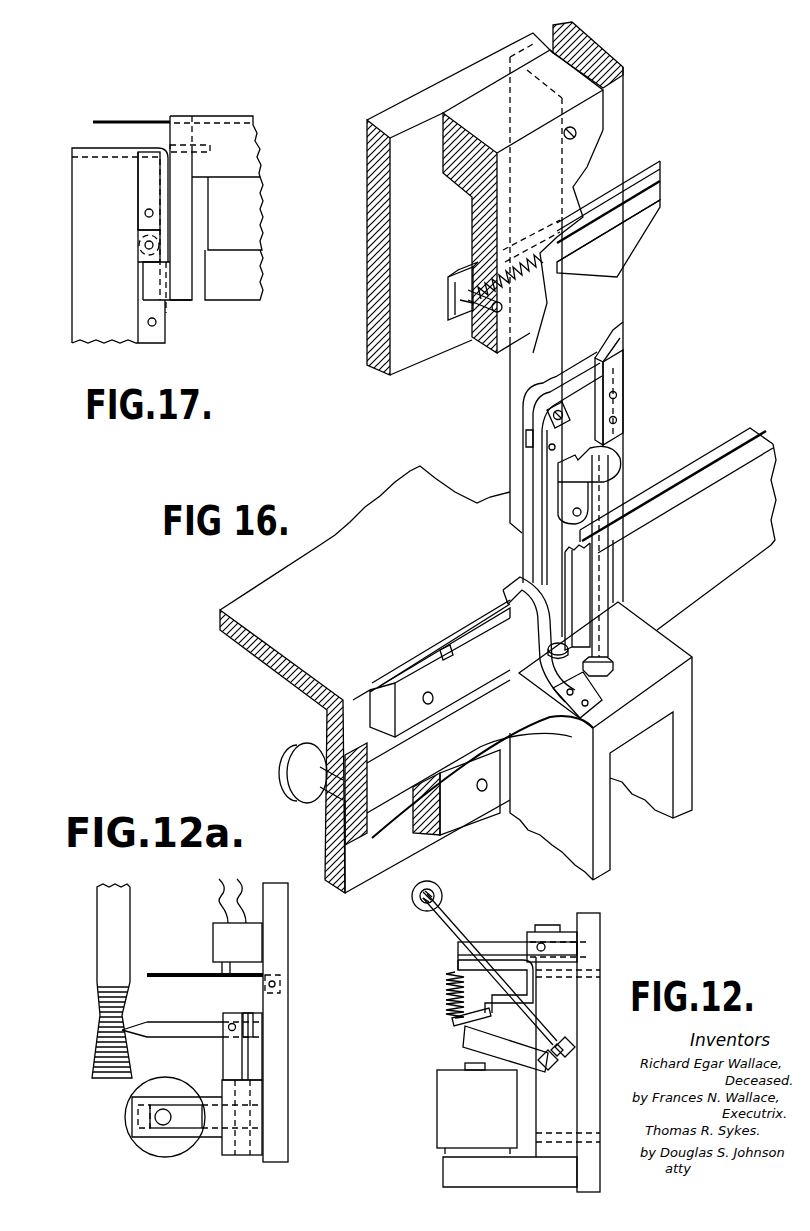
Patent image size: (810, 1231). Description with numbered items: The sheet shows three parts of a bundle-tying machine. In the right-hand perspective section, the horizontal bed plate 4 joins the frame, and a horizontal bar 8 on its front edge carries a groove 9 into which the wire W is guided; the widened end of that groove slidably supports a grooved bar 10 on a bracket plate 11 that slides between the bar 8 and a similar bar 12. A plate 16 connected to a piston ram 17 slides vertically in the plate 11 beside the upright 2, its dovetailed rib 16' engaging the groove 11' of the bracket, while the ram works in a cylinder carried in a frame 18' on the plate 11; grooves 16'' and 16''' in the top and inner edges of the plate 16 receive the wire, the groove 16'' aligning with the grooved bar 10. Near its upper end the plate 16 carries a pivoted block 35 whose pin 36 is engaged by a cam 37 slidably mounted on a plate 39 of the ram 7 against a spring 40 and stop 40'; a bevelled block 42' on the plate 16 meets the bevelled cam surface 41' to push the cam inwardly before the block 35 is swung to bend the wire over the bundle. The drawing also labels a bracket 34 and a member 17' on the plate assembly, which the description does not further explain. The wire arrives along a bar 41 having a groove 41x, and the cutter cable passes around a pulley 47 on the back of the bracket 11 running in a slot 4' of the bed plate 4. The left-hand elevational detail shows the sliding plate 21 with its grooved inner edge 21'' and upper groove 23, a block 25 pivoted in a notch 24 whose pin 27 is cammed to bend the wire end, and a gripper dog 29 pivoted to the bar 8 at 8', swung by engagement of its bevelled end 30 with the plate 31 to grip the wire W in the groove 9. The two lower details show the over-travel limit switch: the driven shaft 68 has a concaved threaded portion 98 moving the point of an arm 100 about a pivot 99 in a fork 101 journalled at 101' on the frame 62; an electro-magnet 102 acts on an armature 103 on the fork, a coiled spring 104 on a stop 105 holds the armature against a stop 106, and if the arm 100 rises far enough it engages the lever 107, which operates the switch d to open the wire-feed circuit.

In FIG. 17, the wire W is at (106, 120).
In FIG. 17, the plate 21 is at (101, 245).
In FIG. 17, the groove 23 is at (100, 160).
In FIG. 17, the block 25 is at (142, 194).
In FIG. 17, the pin 27 is at (145, 214).
In FIG. 17, the notch 24 is at (140, 243).
In FIG. 17, the bevelled end 30 is at (146, 288).
In FIG. 17, the plate 31 is at (152, 343).
In FIG. 17, the grooved inner vertical edge 21'' is at (183, 321).
In FIG. 17, the gripper dog 29 is at (180, 128).
In FIG. 17, the pivot 8' is at (199, 118).
In FIG. 17, the groove 9 is at (262, 125).
In FIG. 16, the groove 9 is at (405, 678).
In FIG. 17, the horizontal bar 8 is at (270, 151).
In FIG. 16, the horizontal bar 8 is at (441, 643).
In FIG. 17, the bracket plate 11 is at (247, 213).
In FIG. 16, the bracket plate 11 is at (480, 759).
In FIG. 17, the bar 12 is at (253, 280).
In FIG. 16, the bar 12 is at (467, 813).
In FIG. 16, the ram 7 is at (398, 292).
In FIG. 16, the plate 39 is at (496, 221).
In FIG. 16, the upright 2 is at (617, 134).
In FIG. 16, the stop 40' is at (456, 322).
In FIG. 16, the spring 40 is at (537, 283).
In FIG. 16, the bevelled cam surface 41' is at (624, 211).
In FIG. 16, the cam 37 is at (613, 255).
In FIG. 16, the bevelled block 42' is at (632, 383).
In FIG. 16, the groove 16'' is at (533, 396).
In FIG. 16, the pin 36 is at (550, 415).
In FIG. 16, the block 35 is at (527, 437).
In FIG. 16, the groove 16''' is at (504, 501).
In FIG. 16, the bent bracket 34 is at (505, 589).
In FIG. 16, the hook 17' is at (612, 484).
In FIG. 16, the plate 16 is at (621, 556).
In FIG. 16, the dovetailed rib 16' is at (630, 556).
In FIG. 16, the groove 11' is at (622, 659).
In FIG. 16, the piston ram 17 is at (614, 595).
In FIG. 16, the frame 18' is at (620, 741).
In FIG. 16, the bed plate 4 is at (365, 679).
In FIG. 16, the slot 4' is at (315, 846).
In FIG. 16, the pulley 47 is at (296, 748).
In FIG. 16, the grooved bar 10 is at (443, 653).
In FIG. 16, the groove 41x is at (710, 468).
In FIG. 16, the bar 41 is at (679, 530).
In FIG. 12A, the driven shaft 68 is at (123, 913).
In FIG. 12, the driven shaft 68 is at (440, 890).
In FIG. 12A, the frame 62 is at (279, 951).
In FIG. 12, the frame 62 is at (600, 923).
In FIG. 12A, the switch d is at (246, 956).
In FIG. 12, the switch d is at (556, 932).
In FIG. 12A, the lever 107 is at (177, 973).
In FIG. 12, the lever 107 is at (502, 942).
In FIG. 12A, the arm 100 is at (175, 1022).
In FIG. 12, the arm 100 is at (453, 928).
In FIG. 12A, the threaded portion 98 is at (122, 1029).
In FIG. 12, the threaded portion 98 is at (413, 900).
In FIG. 12A, the pivot 99 is at (232, 1023).
In FIG. 12, the pivot 99 is at (572, 1042).
In FIG. 12A, the fork 101 is at (282, 1046).
In FIG. 12, the fork 101 is at (557, 1078).
In FIG. 12A, the journal 101' is at (284, 1117).
In FIG. 12, the journal 101' is at (555, 1029).
In FIG. 12A, the electro-magnet 102 is at (128, 1115).
In FIG. 12, the electro-magnet 102 is at (445, 1100).
In FIG. 12A, the armature 103 is at (205, 1137).
In FIG. 12, the armature 103 is at (470, 1043).
In FIG. 12, the stop 105 is at (458, 967).
In FIG. 12, the coiled wire spring 104 is at (449, 995).
In FIG. 12, the stop 106 is at (465, 1023).